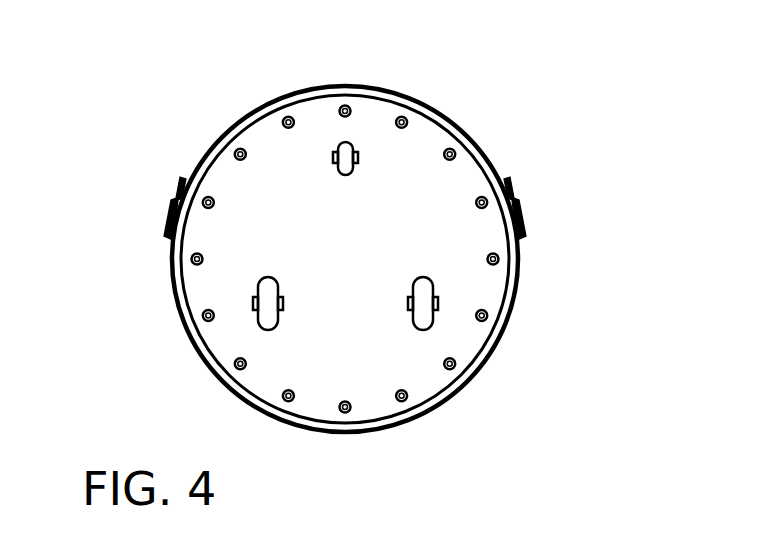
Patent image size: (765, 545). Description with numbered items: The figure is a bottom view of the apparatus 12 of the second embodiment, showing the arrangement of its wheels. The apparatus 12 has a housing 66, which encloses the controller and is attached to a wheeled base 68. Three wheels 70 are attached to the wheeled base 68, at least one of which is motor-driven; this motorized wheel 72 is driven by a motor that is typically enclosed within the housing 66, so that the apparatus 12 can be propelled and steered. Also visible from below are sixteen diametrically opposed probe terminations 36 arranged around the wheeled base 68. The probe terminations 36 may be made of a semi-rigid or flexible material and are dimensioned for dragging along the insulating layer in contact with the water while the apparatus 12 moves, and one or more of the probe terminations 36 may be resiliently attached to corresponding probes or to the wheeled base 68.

The apparatus 12 is at (596, 72).
The probe terminations 36 is at (487, 318).
The housing 66 is at (186, 180).
The wheeled base 68 is at (279, 150).
The wheels 70 is at (421, 280).
The motorized wheel 72 is at (348, 146).